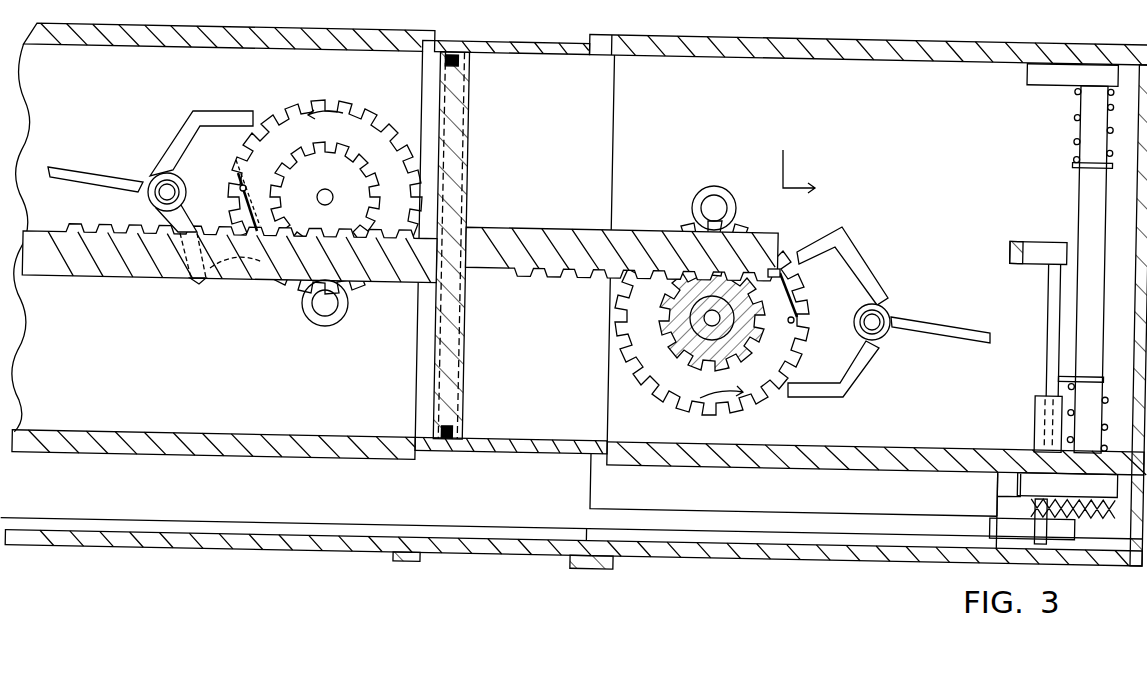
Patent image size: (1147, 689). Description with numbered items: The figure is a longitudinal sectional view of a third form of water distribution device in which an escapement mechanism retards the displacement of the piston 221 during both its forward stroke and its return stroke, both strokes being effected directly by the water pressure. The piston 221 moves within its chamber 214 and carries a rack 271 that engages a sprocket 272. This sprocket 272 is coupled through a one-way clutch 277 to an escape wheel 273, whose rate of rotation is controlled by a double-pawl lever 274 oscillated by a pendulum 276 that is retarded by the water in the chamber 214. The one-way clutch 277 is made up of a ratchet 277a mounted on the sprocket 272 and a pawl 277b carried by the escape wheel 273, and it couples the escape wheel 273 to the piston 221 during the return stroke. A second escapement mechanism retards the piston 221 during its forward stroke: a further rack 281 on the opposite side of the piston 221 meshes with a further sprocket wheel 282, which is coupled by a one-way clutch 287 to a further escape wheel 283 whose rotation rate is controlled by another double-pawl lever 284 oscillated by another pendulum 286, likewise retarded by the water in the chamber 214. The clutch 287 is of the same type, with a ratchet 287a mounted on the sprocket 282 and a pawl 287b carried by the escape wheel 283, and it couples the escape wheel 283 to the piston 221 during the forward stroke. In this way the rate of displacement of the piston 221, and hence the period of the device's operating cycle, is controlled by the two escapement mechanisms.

The chamber 214 is at (552, 168).
The piston 221 is at (465, 120).
The rack 271 is at (548, 226).
The sprocket 272 is at (665, 312).
The escape wheel 273 is at (662, 395).
The double-pawl lever 274 is at (860, 266).
The pendulum 276 is at (940, 323).
The one-way clutch 277 is at (797, 262).
The ratchet 277a is at (745, 386).
The pawl 277b is at (790, 340).
The further rack 281 is at (275, 275).
The further sprocket wheel 282 is at (338, 165).
The further escape wheel 283 is at (340, 118).
The double-pawl lever 284 is at (183, 143).
The pendulum 286 is at (82, 169).
The one-way clutch 287 is at (218, 176).
The ratchet 287a is at (273, 157).
The pawl 287b is at (262, 172).